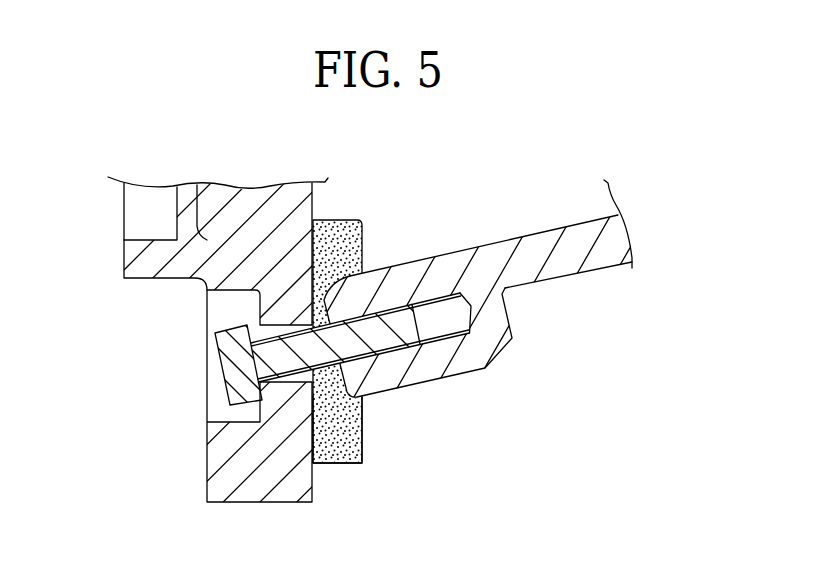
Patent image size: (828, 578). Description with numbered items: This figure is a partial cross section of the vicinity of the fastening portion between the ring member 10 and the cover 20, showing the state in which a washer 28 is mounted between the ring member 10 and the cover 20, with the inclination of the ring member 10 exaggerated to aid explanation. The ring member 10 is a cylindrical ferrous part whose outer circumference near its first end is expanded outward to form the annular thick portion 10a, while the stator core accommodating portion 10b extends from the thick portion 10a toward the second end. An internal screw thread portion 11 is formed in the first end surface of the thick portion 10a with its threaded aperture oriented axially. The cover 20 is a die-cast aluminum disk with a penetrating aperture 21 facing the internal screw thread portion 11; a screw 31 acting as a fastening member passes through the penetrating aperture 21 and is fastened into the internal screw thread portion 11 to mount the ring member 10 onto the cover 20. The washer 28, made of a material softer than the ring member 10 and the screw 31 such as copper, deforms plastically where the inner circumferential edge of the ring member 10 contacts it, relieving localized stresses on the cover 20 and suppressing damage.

The ring member 10 is at (467, 304).
The thick portion 10a is at (470, 357).
The stator core accommodating portion 10b is at (567, 260).
The internal screw thread portion 11 is at (432, 338).
The cover 20 is at (195, 467).
The penetrating aperture 21 is at (322, 380).
The washer 28 is at (350, 422).
The screw 31 is at (237, 361).